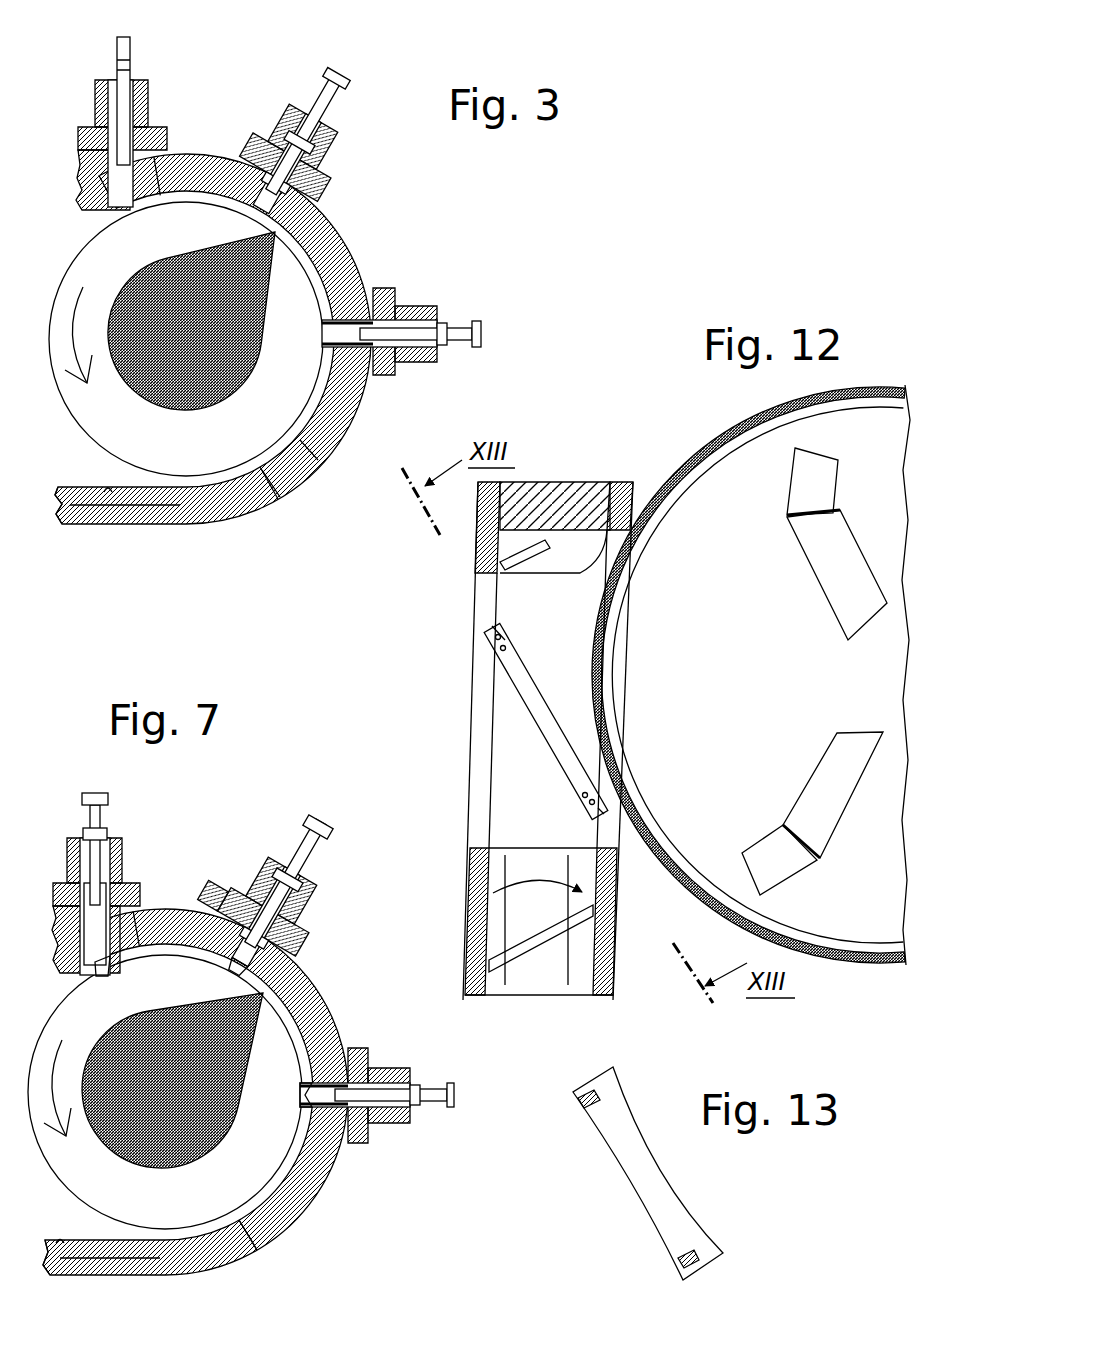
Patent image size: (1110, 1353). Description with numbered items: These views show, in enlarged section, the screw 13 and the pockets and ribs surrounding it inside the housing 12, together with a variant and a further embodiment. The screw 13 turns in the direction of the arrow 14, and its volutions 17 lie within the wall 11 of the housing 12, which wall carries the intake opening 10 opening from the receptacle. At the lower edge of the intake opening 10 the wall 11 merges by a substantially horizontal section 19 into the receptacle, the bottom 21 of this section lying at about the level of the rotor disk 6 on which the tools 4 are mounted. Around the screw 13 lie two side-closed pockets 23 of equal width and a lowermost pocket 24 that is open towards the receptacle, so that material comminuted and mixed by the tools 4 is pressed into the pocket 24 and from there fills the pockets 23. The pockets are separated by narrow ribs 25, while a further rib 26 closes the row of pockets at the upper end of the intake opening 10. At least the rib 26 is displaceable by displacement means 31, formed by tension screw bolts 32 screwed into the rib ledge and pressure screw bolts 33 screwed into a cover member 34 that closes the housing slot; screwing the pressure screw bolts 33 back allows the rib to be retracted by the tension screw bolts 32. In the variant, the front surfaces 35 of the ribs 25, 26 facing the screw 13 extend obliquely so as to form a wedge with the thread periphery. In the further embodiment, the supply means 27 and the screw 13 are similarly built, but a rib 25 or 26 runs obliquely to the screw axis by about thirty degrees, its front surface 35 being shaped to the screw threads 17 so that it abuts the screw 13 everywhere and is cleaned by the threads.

In FIG. 12, the rotating tool 4 is at (804, 566).
In FIG. 12, the rotor disk 6 is at (740, 705).
In FIG. 3, the intake opening 10 is at (94, 485).
In FIG. 3, the wall 11 is at (316, 458).
In FIG. 3, the housing 12 is at (374, 272).
In FIG. 3, the screw 13 is at (183, 403).
In FIG. 7, the screw 13 is at (188, 1158).
In FIG. 12, the screw 13 is at (539, 990).
In FIG. 3, the arrow 14 is at (90, 321).
In FIG. 7, the arrow 14 is at (67, 1075).
In FIG. 12, the arrow 14 is at (537, 905).
In FIG. 3, the volutions 17 is at (130, 440).
In FIG. 7, the volutions 17 is at (153, 1215).
In FIG. 3, the horizontally disposed section 19 is at (172, 515).
In FIG. 7, the horizontally disposed section 19 is at (92, 1258).
In FIG. 3, the bottom 21 is at (108, 492).
In FIG. 7, the bottom 21 is at (58, 1243).
In FIG. 3, the pocket 23 is at (212, 192).
In FIG. 7, the pocket 23 is at (158, 950).
In FIG. 3, the pocket 24 is at (282, 500).
In FIG. 7, the pocket 24 is at (300, 1193).
In FIG. 3, the rib 25 is at (322, 345).
In FIG. 7, the rib 25 is at (218, 905).
In FIG. 3, the rib 26 is at (122, 210).
In FIG. 7, the rib 26 is at (92, 966).
In FIG. 12, the rib 26 is at (546, 728).
In FIG. 13, the rib 26 is at (660, 1188).
In FIG. 12, the supply means 27 is at (744, 473).
In FIG. 3, the displacement means 31 is at (347, 153).
In FIG. 7, the displacement means 31 is at (130, 859).
In FIG. 7, the tension screw bolt 32 is at (104, 812).
In FIG. 12, the tension screw bolt 32 is at (507, 642).
In FIG. 3, the pressure screw bolt 33 is at (132, 62).
In FIG. 12, the pressure screw bolt 33 is at (503, 651).
In FIG. 3, the cover member 34 is at (150, 108).
In FIG. 7, the front surface 35 is at (102, 968).